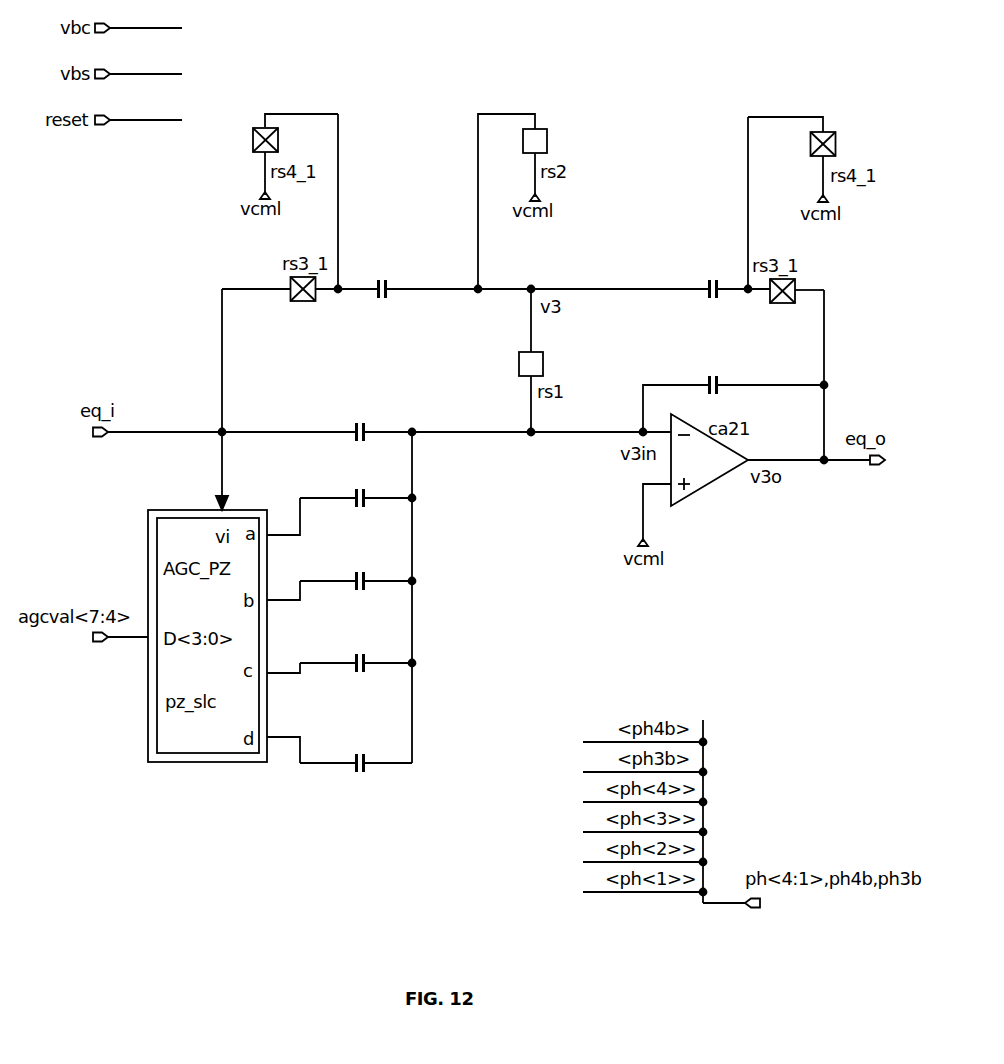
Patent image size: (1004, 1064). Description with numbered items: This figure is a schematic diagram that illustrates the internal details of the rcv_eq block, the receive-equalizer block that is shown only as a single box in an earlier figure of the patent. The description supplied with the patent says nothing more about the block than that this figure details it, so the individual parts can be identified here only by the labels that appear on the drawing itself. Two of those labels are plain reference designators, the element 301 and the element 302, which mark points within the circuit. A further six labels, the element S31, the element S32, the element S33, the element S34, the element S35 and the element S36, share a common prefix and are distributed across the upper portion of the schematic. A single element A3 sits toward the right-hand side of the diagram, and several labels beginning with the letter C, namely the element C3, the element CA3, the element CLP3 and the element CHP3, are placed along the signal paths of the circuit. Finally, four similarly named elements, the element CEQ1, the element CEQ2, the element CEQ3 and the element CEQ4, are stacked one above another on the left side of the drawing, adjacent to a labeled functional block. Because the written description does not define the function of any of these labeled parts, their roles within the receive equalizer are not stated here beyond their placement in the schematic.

The node between CA3 and switch S35 301 is at (746, 219).
The node between switch S33 and CLP3 302 is at (357, 203).
The switch S31 is at (518, 377).
The switch S32 is at (520, 165).
The switch S33 is at (306, 302).
The switch S34 is at (253, 163).
The switch S35 is at (792, 304).
The switch S36 is at (809, 167).
The amplifier A3 is at (709, 460).
The capacitor C3 is at (700, 375).
The capacitor CA3 is at (691, 281).
The capacitor CLP3 is at (381, 277).
The capacitor CHP3 is at (356, 420).
The capacitor CEQ1 is at (339, 498).
The capacitor CEQ2 is at (339, 573).
The capacitor CEQ3 is at (339, 651).
The capacitor CEQ4 is at (339, 750).